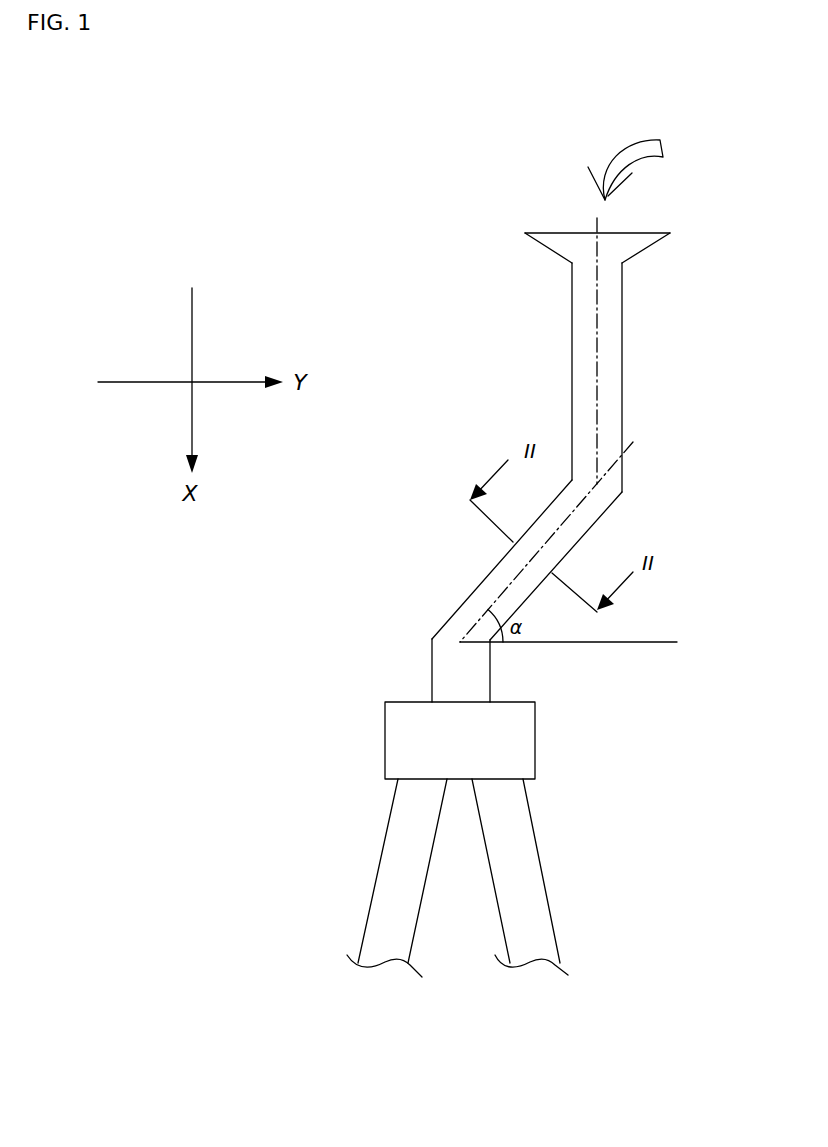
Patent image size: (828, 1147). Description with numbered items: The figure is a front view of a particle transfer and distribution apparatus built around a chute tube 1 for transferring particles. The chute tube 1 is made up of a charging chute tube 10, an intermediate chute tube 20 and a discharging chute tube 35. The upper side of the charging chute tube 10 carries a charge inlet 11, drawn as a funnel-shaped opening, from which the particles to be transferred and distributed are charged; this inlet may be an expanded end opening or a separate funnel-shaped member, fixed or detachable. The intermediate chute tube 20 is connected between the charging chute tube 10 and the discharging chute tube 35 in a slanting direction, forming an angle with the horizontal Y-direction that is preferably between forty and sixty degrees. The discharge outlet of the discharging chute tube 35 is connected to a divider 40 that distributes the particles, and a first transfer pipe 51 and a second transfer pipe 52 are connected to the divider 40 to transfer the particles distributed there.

The chute tube 1 is at (458, 373).
The charging chute tube 10 is at (625, 373).
The charge inlet 11 is at (550, 231).
The intermediate chute tube 20 is at (473, 587).
The discharging chute tube 35 is at (430, 672).
The divider 40 is at (385, 745).
The first transfer pipe 51 is at (380, 863).
The second transfer pipe 52 is at (540, 860).